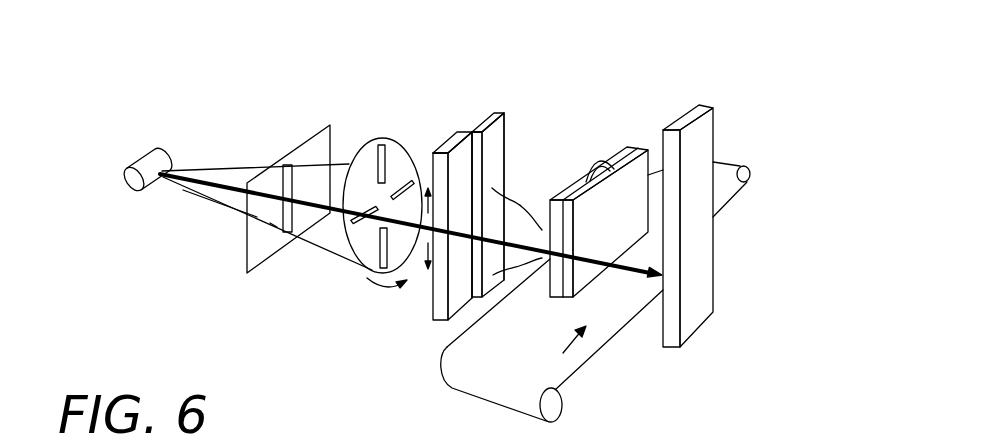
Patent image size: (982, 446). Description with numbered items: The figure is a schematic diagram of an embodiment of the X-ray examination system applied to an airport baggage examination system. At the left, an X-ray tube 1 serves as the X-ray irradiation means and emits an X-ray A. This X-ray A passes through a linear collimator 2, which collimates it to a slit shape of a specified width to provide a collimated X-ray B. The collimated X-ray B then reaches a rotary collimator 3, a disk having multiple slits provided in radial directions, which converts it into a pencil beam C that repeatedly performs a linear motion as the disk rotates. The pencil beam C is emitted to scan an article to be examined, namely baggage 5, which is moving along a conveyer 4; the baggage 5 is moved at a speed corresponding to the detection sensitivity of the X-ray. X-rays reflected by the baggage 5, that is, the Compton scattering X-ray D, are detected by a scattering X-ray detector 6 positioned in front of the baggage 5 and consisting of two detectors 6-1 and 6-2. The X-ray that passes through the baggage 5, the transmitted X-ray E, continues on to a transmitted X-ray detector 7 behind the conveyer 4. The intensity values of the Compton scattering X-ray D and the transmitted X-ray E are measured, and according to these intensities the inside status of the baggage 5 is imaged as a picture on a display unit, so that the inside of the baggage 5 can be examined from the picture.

The X-ray tube 1 is at (141, 153).
The linear collimator 2 is at (309, 146).
The rotary collimator 3 is at (377, 138).
The conveyer 4 is at (491, 384).
The baggage 5 is at (622, 157).
The scattering X-ray detector 6 is at (466, 122).
The detector 6-1 is at (449, 150).
The detector 6-2 is at (497, 114).
The transmitted X-ray detector 7 is at (703, 103).
The X-ray A is at (212, 168).
The collimated X-ray B is at (320, 248).
The pencil beam C is at (349, 248).
The Compton scattering X-ray D is at (522, 207).
The transmitted X-ray E is at (627, 268).